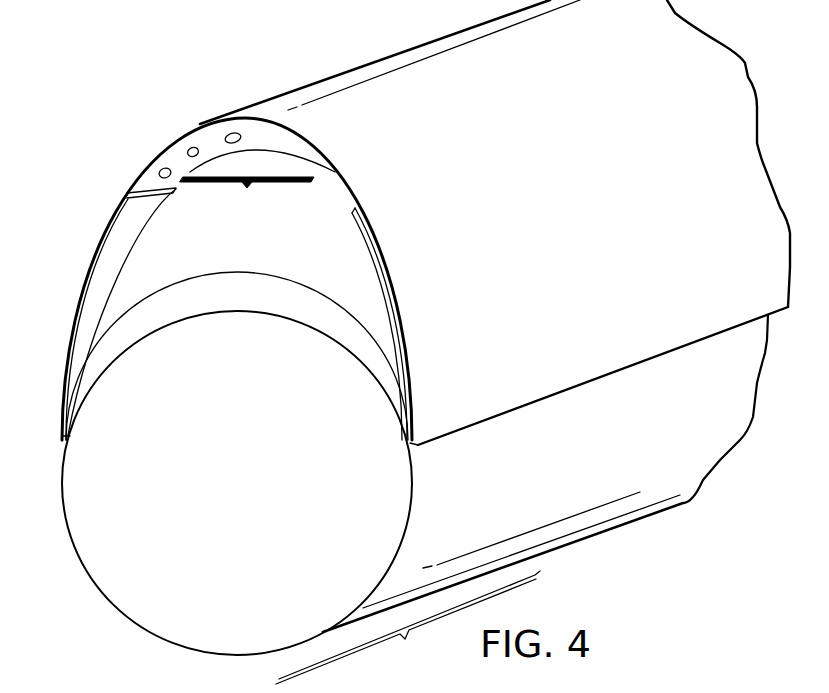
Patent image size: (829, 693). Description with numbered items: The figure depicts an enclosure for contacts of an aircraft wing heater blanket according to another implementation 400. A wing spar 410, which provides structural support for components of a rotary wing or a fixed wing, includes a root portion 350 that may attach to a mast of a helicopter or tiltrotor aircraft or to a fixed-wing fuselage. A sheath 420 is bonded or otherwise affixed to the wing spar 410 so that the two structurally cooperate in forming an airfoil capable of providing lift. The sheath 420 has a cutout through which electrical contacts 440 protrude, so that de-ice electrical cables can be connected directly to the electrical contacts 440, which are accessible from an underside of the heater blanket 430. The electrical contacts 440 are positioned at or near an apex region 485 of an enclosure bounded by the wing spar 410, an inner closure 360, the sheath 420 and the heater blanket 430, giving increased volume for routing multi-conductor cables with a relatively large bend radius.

The implementation 400 is at (145, 69).
The heater blanket 430 is at (363, 68).
The inner closure 360 is at (276, 259).
The sheath 420 is at (121, 249).
The electrical contacts 440 is at (226, 137).
The apex region 485 is at (247, 200).
The wing spar 410 is at (252, 520).
The root portion 350 is at (408, 627).